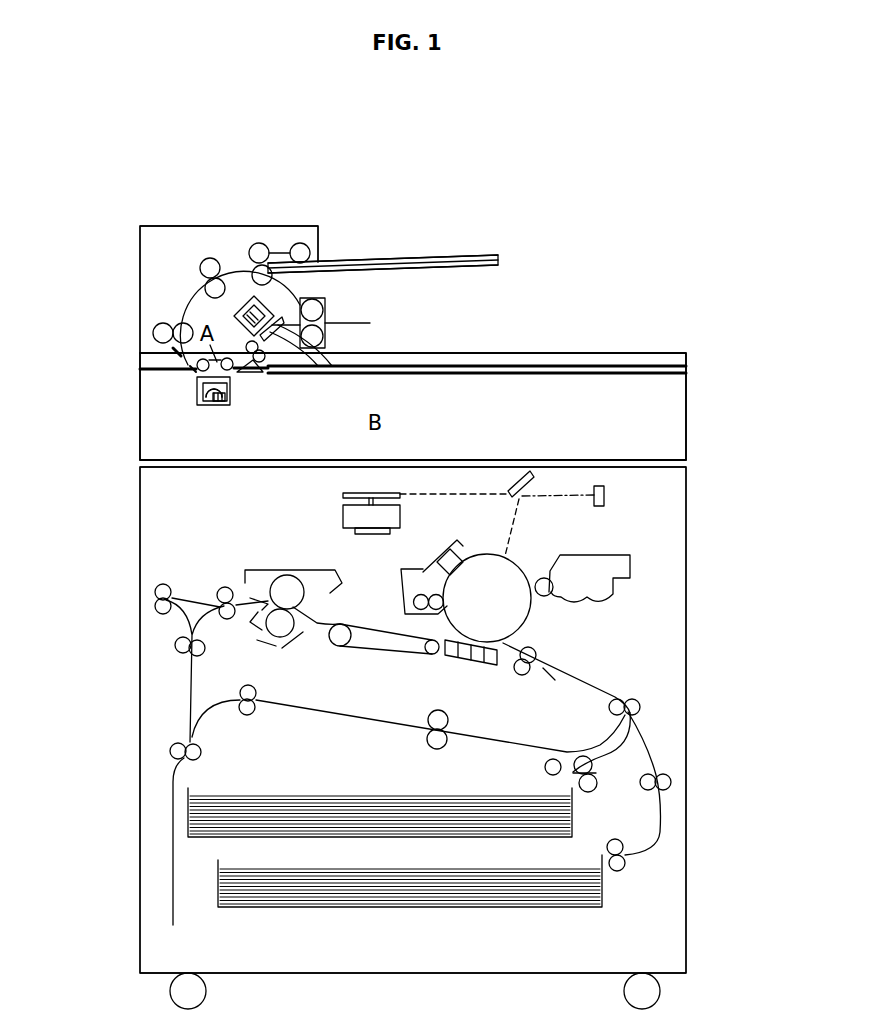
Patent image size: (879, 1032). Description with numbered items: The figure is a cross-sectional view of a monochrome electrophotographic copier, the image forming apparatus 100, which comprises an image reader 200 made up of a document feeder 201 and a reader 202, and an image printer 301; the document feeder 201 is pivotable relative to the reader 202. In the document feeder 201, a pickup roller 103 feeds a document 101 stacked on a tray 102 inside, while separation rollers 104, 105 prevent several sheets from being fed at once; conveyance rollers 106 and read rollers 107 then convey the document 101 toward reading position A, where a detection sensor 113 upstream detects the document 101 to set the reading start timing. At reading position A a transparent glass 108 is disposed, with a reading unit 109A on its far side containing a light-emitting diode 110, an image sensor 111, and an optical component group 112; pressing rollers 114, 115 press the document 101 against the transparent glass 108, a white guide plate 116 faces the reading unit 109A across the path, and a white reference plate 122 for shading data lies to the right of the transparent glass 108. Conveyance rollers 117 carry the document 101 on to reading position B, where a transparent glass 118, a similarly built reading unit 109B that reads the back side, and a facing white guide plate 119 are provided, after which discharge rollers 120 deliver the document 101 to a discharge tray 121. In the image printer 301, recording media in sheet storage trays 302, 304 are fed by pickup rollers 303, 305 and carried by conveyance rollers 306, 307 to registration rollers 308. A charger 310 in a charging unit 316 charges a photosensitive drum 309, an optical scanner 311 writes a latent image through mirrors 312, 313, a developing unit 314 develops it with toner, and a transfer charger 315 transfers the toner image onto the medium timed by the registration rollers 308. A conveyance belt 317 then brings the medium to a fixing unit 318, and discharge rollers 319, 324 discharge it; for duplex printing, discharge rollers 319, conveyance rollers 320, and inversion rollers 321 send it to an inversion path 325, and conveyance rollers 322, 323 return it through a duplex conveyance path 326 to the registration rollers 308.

The image forming apparatus 100 is at (76, 160).
The document 101 is at (445, 257).
The tray 102 is at (479, 268).
The pickup roller 103 is at (300, 243).
The separation roller 104 is at (258, 243).
The separation roller 105 is at (256, 265).
The conveyance rollers 106 is at (200, 266).
The read rollers 107 is at (154, 330).
The transparent glass 108 is at (193, 372).
The reading unit 109A is at (196, 392).
The reading unit 109B is at (330, 263).
The light-emitting diode 110 is at (231, 386).
The image sensor 111 is at (203, 405).
The optical component group 112 is at (232, 396).
The detection sensor 113 is at (165, 360).
The pressing roller 114 is at (198, 367).
The pressing roller 115 is at (206, 291).
The white guide plate 116 is at (176, 354).
The conveyance rollers 117 is at (264, 358).
The transparent glass 118 is at (318, 300).
The white guide plate 119 is at (283, 322).
The discharge rollers 120 is at (327, 333).
The discharge tray 121 is at (590, 353).
The white reference plate 122 is at (266, 380).
The image reader 200 is at (770, 222).
The document feeder 201 is at (688, 309).
The reader 202 is at (688, 411).
The image printer 301 is at (690, 501).
The sheet storage tray 302 is at (574, 800).
The pickup roller 303 is at (544, 767).
The sheet storage tray 304 is at (604, 896).
The pickup roller 305 is at (606, 849).
The conveyance rollers 306 is at (632, 698).
The conveyance rollers 307 is at (672, 782).
The registration rollers 308 is at (535, 651).
The photosensitive drum 309 is at (520, 566).
The charger 310 is at (458, 548).
The optical scanner 311 is at (343, 511).
The mirror 312 is at (606, 495).
The mirror 313 is at (525, 475).
The developing unit 314 is at (631, 567).
The transfer charger 315 is at (478, 662).
The charging unit 316 is at (410, 568).
The conveyance belt 317 is at (357, 650).
The fixing unit 318 is at (279, 570).
The discharge rollers 319 is at (224, 586).
The conveyance rollers 320 is at (202, 652).
The inversion rollers 321 is at (200, 757).
The conveyance rollers 322 is at (252, 714).
The conveyance rollers 323 is at (437, 709).
The discharge rollers 324 is at (155, 590).
The inversion path 325 is at (172, 766).
The duplex conveyance path 326 is at (357, 731).